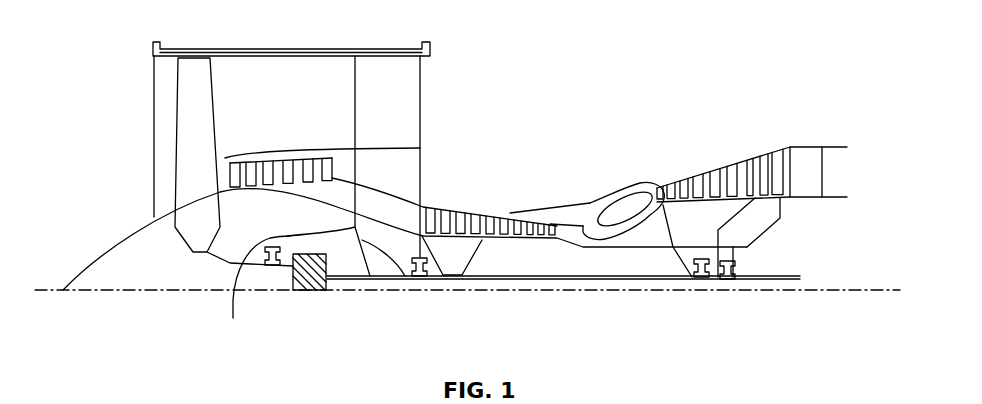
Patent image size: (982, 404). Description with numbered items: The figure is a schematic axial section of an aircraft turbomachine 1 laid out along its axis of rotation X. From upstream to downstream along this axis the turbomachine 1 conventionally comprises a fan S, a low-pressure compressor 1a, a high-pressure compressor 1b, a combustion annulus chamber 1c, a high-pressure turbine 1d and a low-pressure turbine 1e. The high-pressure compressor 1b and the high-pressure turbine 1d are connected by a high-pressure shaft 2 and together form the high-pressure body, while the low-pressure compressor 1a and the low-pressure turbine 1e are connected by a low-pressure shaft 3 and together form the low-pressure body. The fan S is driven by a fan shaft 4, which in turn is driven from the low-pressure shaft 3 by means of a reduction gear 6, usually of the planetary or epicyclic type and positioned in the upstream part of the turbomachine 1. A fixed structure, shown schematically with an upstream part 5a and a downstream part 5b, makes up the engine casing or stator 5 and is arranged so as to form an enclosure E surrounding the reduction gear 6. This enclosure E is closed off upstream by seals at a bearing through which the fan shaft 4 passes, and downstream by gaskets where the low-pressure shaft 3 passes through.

The turbomachine 1 is at (531, 88).
The low-pressure compressor 1a is at (250, 163).
The high-pressure compressor 1b is at (453, 212).
The combustion annulus chamber 1c is at (620, 207).
The high-pressure turbine 1d is at (660, 195).
The low-pressure turbine 1e is at (777, 157).
The high-pressure shaft 2 is at (593, 247).
The low-pressure shaft 3 is at (517, 280).
The fan shaft 4 is at (253, 267).
The stator 5 is at (341, 222).
The upstream part 5a is at (256, 289).
The downstream part 5b is at (410, 278).
The reduction gear 6 is at (307, 273).
The enclosure E is at (335, 256).
The fan S is at (185, 117).
The axis of rotation X is at (42, 292).